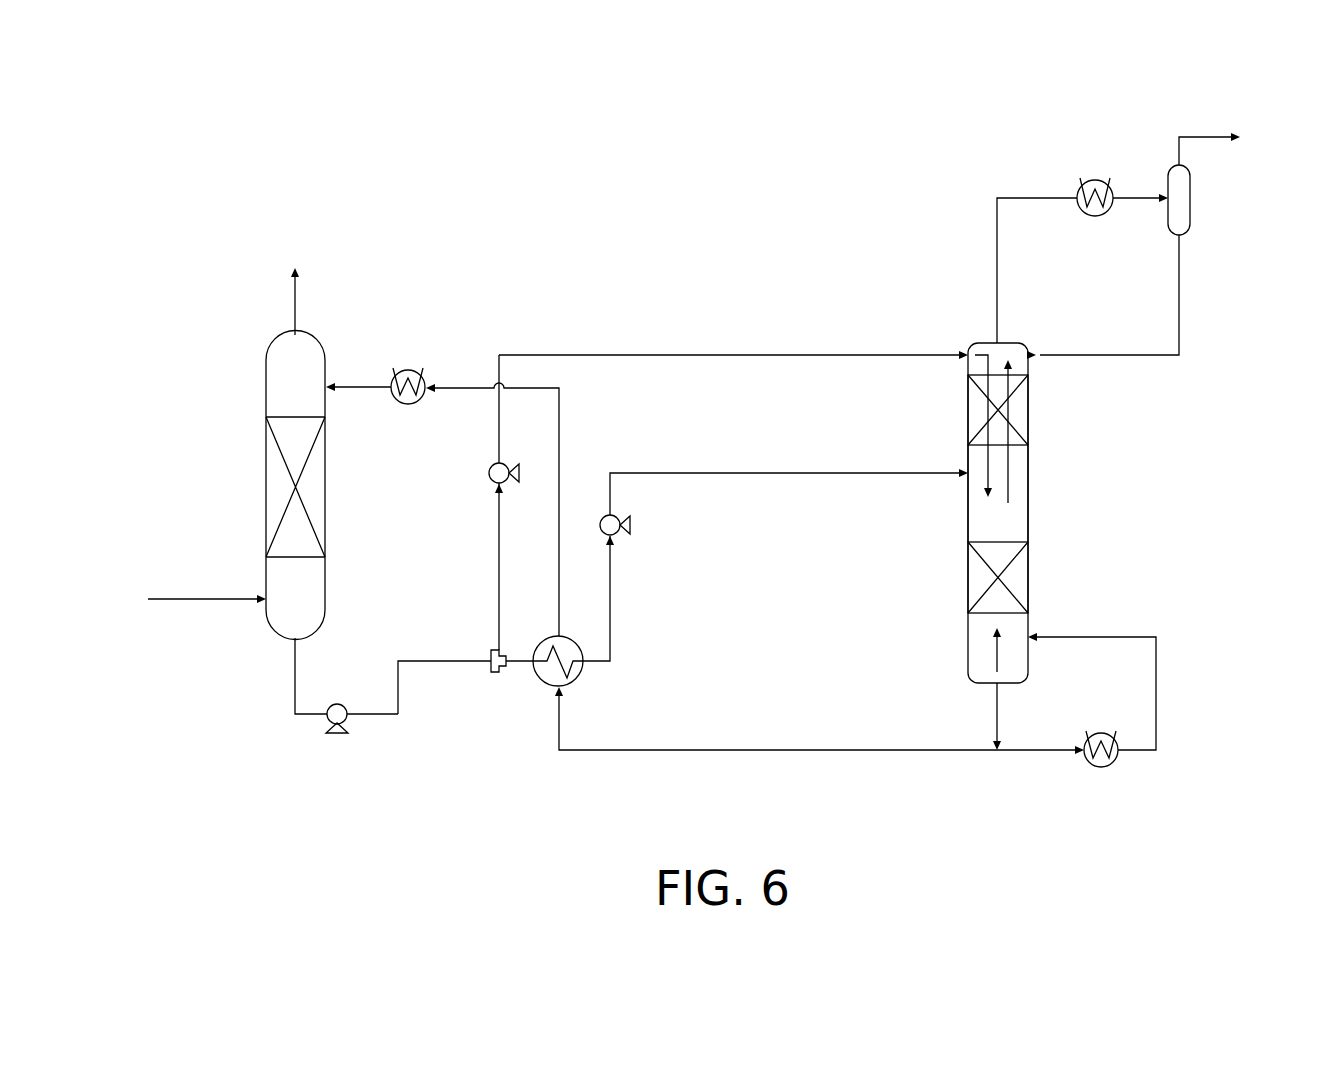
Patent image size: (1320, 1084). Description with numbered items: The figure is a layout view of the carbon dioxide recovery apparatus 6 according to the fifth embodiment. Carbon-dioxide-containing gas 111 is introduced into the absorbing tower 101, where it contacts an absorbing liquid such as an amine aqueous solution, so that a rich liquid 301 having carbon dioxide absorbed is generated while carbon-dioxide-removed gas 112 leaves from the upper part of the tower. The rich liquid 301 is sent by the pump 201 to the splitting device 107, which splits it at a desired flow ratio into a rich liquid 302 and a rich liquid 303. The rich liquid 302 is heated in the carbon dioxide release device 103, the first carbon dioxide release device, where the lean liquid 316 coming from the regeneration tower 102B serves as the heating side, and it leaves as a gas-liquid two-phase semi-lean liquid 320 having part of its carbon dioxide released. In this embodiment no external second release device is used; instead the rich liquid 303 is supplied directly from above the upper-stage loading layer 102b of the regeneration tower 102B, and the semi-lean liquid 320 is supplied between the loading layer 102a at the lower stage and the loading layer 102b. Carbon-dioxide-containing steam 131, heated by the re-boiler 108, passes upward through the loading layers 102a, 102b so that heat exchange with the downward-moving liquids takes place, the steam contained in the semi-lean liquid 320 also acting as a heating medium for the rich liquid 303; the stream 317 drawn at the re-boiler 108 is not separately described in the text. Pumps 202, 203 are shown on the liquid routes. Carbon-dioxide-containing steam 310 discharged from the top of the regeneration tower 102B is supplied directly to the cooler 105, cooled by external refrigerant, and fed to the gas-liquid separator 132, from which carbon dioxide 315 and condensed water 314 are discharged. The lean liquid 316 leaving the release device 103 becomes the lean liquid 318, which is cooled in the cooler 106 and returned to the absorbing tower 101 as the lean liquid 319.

The carbon dioxide recovery apparatus 6 is at (396, 208).
The absorbing tower 101 is at (266, 401).
The loading layer 102a is at (1000, 553).
The loading layer 102b is at (1012, 415).
The regeneration tower 102B is at (1030, 470).
The carbon dioxide release device 103 is at (578, 682).
The cooler 105 is at (1092, 180).
The cooler 106 is at (411, 370).
The splitting device 107 is at (491, 656).
The re-boiler 108 is at (1080, 761).
The carbon-dioxide-containing gas 111 is at (185, 599).
The carbon-dioxide-removed gas 112 is at (293, 301).
The carbon-dioxide-containing steam 131 is at (1000, 655).
The gas-liquid separator 132 is at (1192, 185).
The pump 201 is at (339, 735).
The pump 202 is at (622, 536).
The pump 203 is at (496, 463).
The rich liquid 301 is at (312, 717).
The rich liquid 302 is at (535, 664).
The rich liquid 303 is at (497, 525).
The carbon-dioxide-containing steam 310 is at (996, 265).
The condensed water 314 is at (1182, 272).
The carbon dioxide 315 is at (1178, 135).
The lean liquid 316 is at (816, 752).
The reboiler return line 317 is at (1140, 636).
The lean liquid 318 is at (561, 416).
The lean liquid 319 is at (363, 386).
The semi-lean liquid 320 is at (612, 632).